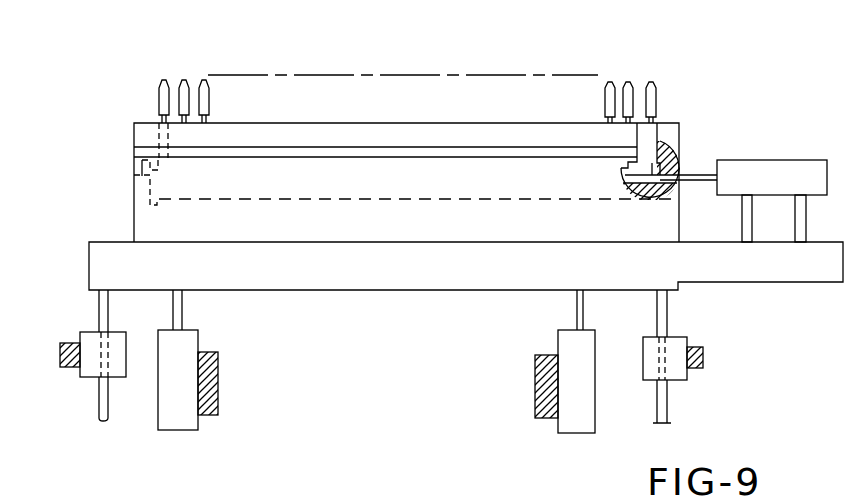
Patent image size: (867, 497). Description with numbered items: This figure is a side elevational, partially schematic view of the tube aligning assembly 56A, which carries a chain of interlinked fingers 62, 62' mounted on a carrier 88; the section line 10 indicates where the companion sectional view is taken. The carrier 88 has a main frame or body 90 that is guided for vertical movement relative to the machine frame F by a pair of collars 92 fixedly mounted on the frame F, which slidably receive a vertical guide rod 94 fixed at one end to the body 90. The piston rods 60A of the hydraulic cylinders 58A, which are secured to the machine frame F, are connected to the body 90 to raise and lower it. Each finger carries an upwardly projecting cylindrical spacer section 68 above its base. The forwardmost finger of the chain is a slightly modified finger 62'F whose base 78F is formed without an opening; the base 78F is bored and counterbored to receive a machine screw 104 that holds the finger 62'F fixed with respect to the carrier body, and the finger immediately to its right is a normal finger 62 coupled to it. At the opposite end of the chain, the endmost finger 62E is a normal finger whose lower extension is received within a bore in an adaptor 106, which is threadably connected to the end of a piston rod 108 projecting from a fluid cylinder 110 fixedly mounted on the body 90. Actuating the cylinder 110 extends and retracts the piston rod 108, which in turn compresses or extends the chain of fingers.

The section line 10- 10 is at (426, 60).
The tube aligning assembly 56A is at (328, 60).
The finger 62 is at (391, 76).
The finger 62' is at (416, 69).
The forwardmost finger 62'F is at (138, 76).
The endmost finger 62E is at (651, 82).
The cylindrical spacer section 68 is at (650, 140).
The adaptor 106 is at (666, 174).
The piston rod 108 is at (697, 174).
The fluid cylinder 110 is at (764, 186).
The base 78F is at (141, 172).
The machine screw 104 is at (134, 195).
The carrier 88 is at (466, 309).
The main frame or body 90 is at (440, 276).
The vertical guide rod 94 is at (108, 316).
The collar 92 is at (118, 367).
The piston rod 60A is at (183, 317).
The hydraulic cylinder 58A is at (178, 422).
The machine frame F is at (60, 357).